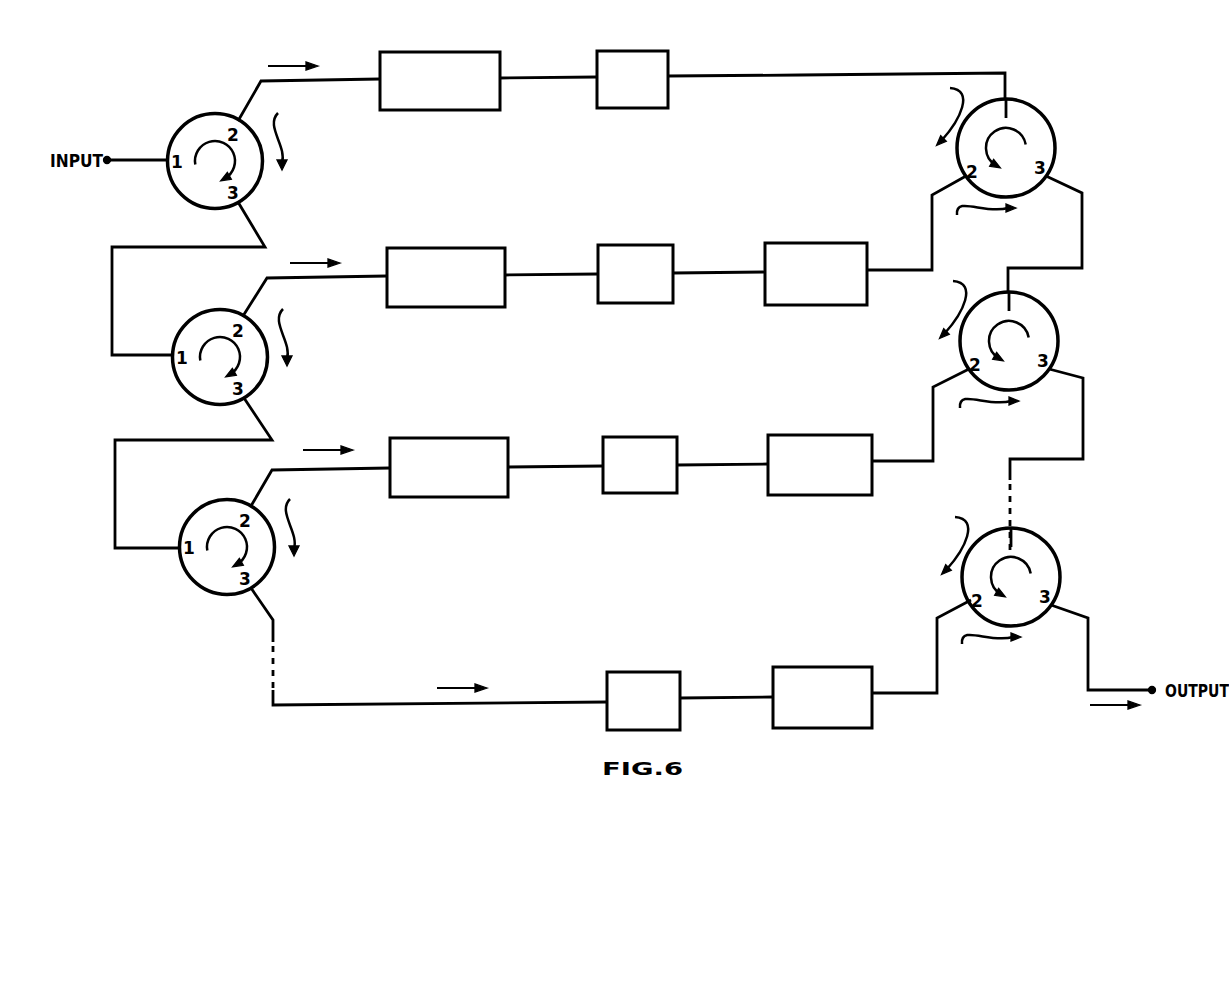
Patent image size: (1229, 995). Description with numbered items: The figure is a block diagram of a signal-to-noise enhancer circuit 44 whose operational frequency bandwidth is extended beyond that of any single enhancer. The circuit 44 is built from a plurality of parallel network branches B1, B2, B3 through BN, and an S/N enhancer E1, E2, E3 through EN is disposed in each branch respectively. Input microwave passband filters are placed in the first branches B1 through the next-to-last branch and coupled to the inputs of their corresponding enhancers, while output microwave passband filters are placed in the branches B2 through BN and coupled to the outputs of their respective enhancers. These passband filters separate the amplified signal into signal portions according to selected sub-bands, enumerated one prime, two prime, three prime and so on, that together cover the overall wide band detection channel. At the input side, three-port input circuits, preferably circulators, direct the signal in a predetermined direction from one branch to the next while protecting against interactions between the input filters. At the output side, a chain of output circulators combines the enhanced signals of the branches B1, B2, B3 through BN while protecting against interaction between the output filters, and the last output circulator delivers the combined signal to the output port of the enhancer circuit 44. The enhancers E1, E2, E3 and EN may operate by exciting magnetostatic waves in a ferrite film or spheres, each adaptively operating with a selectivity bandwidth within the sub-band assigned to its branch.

The signal-to-noise enhancer circuit 44 is at (830, 50).
The S/N enhancer E1 is at (668, 62).
The S/N enhancer E2 is at (673, 258).
The S/N enhancer E3 is at (677, 450).
The S/N enhancer EN is at (680, 683).
The network branch B1 is at (748, 67).
The network branch B2 is at (740, 254).
The network branch B3 is at (744, 446).
The network branch BN is at (750, 677).